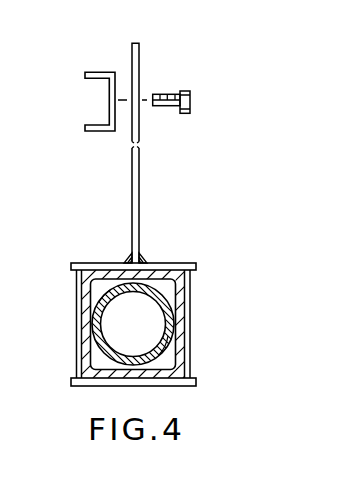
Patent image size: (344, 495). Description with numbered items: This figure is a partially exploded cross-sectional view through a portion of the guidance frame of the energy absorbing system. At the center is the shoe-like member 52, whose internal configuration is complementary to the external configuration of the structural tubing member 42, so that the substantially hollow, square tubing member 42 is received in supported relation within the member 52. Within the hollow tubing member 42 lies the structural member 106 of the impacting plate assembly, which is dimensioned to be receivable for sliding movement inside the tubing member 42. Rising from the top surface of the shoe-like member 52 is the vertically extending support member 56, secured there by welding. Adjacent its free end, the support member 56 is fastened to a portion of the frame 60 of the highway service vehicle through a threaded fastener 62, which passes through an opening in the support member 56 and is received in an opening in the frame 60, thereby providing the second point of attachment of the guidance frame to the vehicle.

The frame 60 is at (101, 72).
The threaded fastener 62 is at (188, 92).
The vertically extending support member 56 is at (136, 190).
The shoe-like member 52 is at (188, 285).
The structural tubing member 42 is at (178, 318).
The structural member 106 is at (162, 353).